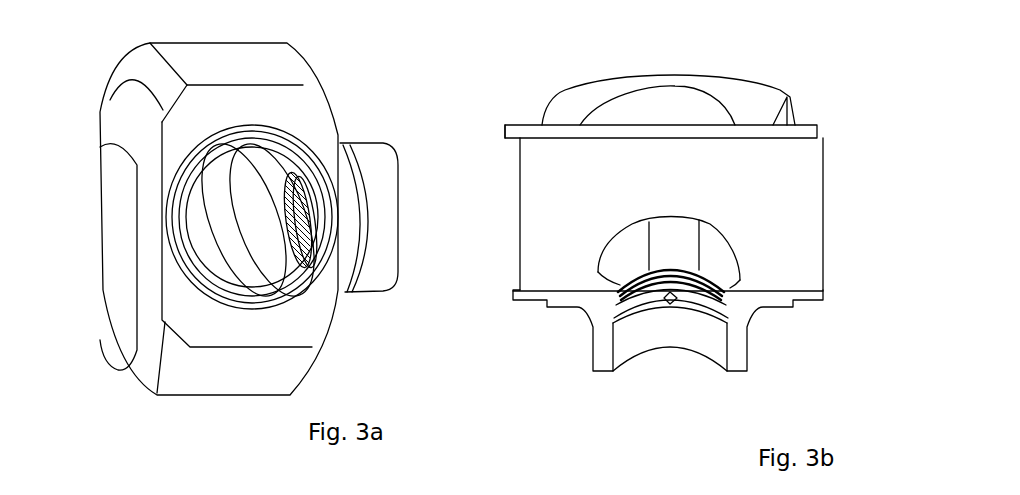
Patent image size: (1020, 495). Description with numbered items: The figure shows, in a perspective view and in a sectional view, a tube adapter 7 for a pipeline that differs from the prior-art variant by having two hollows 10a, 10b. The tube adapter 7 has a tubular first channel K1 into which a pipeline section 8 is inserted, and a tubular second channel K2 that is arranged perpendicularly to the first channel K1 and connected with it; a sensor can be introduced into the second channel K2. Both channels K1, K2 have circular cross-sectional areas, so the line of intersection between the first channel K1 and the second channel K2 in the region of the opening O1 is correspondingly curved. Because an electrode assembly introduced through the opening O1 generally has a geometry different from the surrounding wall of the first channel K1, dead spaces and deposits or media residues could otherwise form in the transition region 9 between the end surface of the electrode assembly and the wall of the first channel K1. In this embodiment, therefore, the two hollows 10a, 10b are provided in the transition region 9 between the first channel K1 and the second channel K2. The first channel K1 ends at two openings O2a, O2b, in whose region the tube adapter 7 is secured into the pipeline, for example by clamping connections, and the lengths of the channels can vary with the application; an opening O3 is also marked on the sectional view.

In FIG. 3A, the tube adapter 7 is at (84, 91).
In FIG. 3B, the tube adapter 7 is at (516, 91).
In FIG. 3A, the pipeline section 8 is at (94, 159).
In FIG. 3B, the pipeline section 8 is at (564, 120).
In FIG. 3A, the transition region 9 is at (301, 262).
In FIG. 3B, the transition region 9 is at (689, 269).
In FIG. 3A, the hollow 10a is at (263, 279).
In FIG. 3B, the hollow 10a is at (656, 250).
In FIG. 3A, the hollow 10b is at (310, 116).
In FIG. 3A, the first channel K1 is at (223, 264).
In FIG. 3B, the first channel K1 is at (573, 203).
In FIG. 3A, the second channel K2 is at (388, 279).
In FIG. 3B, the second channel K2 is at (689, 375).
In FIG. 3A, the opening O1 is at (298, 211).
In FIG. 3B, the opening O1 is at (714, 302).
In FIG. 3B, the opening of the first channel O2a is at (517, 248).
In FIG. 3B, the opening of the first channel O2b is at (862, 236).
In FIG. 3B, the third surface O3 is at (632, 404).